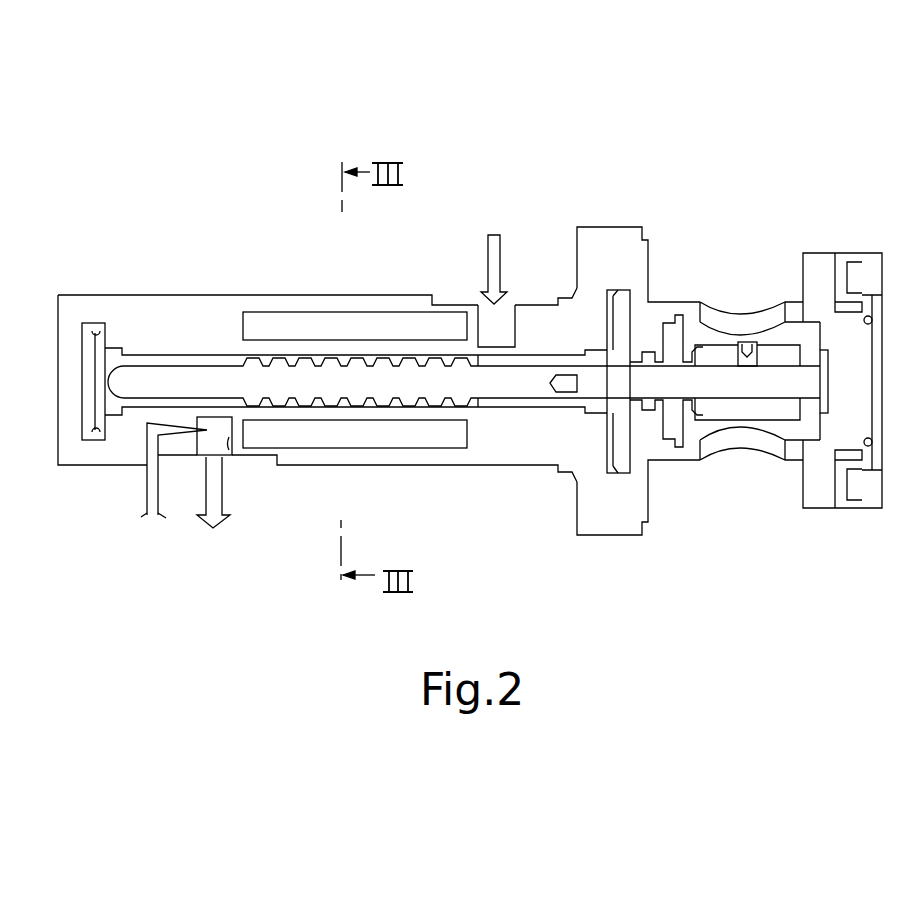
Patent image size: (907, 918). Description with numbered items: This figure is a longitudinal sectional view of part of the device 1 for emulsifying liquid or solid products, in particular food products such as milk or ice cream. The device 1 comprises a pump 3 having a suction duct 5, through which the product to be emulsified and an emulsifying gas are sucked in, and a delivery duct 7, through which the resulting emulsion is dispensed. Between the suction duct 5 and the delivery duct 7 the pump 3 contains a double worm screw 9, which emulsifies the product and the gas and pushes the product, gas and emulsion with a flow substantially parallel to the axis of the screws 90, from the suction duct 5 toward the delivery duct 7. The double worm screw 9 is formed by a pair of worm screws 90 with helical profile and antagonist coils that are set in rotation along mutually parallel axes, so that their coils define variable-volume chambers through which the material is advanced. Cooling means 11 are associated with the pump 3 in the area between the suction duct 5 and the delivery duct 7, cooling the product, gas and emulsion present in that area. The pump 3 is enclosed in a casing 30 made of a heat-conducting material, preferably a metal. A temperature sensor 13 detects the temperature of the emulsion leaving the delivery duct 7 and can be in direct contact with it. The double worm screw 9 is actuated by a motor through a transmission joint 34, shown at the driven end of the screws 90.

The device for emulsifying liquid or solid products 1 is at (392, 123).
The pump 3 is at (613, 220).
The suction duct 5 is at (510, 330).
The delivery duct 7 is at (227, 458).
The double worm screw 9 is at (472, 388).
The cooling means 11 is at (347, 330).
The temperature sensor 13 is at (143, 497).
The casing 30 is at (107, 295).
The transmission joint 34 is at (703, 463).
The worm screws 90 is at (297, 383).